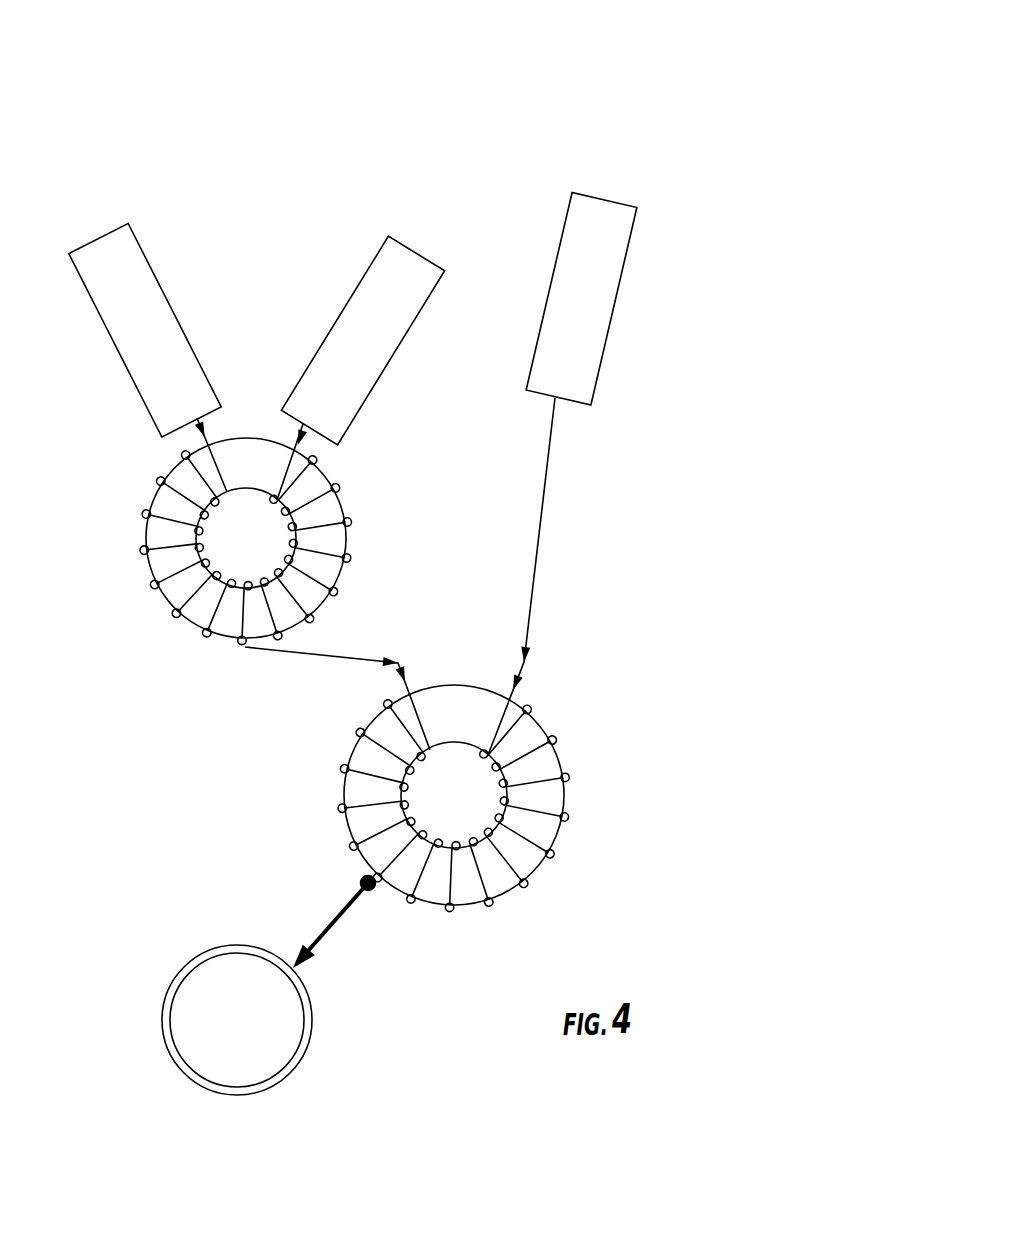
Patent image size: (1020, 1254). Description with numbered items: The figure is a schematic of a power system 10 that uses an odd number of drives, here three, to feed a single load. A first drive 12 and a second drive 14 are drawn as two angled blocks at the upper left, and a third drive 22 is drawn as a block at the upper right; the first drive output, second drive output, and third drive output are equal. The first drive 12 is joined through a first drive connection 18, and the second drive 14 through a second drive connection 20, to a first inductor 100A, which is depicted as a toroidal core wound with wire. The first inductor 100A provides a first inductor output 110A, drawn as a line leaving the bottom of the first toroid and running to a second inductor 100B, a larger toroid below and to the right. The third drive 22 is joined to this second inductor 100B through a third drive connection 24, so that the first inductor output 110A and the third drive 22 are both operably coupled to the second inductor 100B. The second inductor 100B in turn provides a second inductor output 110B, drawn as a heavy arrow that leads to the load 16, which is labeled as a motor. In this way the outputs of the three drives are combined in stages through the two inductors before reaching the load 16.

The system 10 is at (579, 69).
The first drive 12 is at (112, 230).
The second drive 14 is at (412, 245).
The third drive 22 is at (633, 203).
The load 16 is at (305, 1050).
The first drive connection 18 is at (200, 438).
The second drive connection 20 is at (307, 446).
The third drive connection 24 is at (543, 503).
The first inductor 100A is at (157, 607).
The second inductor 100B is at (594, 810).
The first inductor output 110A is at (335, 656).
The second inductor output 110B is at (378, 893).